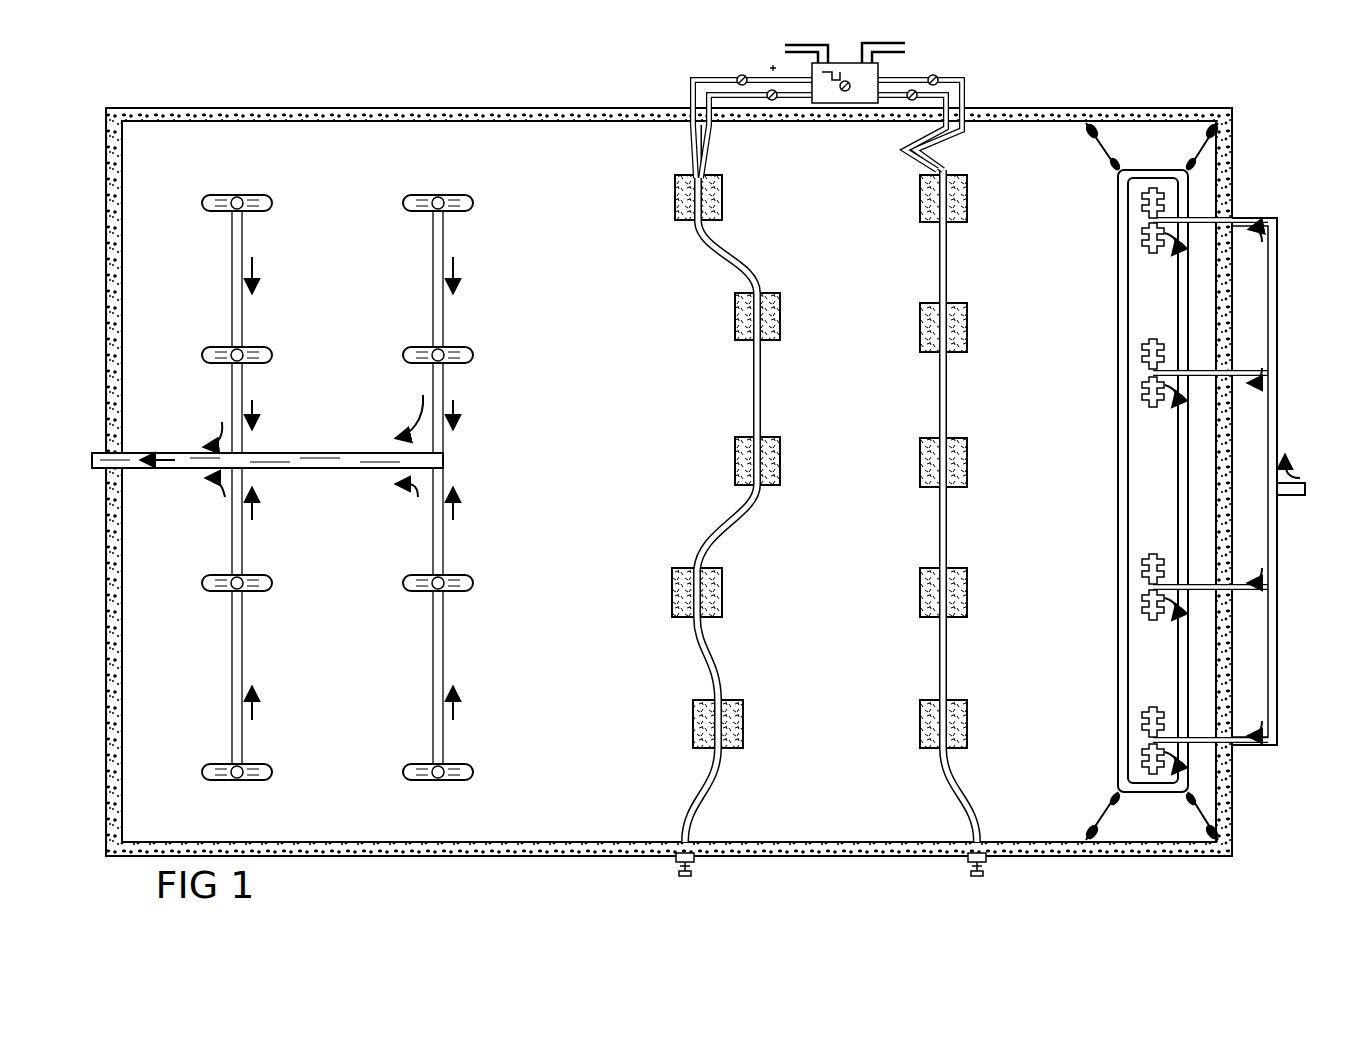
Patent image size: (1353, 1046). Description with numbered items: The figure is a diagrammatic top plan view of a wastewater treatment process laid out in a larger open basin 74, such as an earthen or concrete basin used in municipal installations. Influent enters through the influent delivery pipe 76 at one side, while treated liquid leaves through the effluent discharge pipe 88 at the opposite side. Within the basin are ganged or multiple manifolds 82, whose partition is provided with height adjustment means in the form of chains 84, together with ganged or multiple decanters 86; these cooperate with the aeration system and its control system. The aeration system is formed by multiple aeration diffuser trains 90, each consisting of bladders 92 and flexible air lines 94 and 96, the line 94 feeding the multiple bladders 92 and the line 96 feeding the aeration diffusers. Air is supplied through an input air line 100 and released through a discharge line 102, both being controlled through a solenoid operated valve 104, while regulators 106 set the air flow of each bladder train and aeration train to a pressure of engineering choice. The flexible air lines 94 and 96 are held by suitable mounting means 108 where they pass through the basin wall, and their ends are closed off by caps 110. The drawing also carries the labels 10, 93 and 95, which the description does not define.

The sectional view direction 10 is at (105, 288).
The open basin 74 is at (669, 482).
The influent delivery pipe 76 is at (1313, 487).
The ganged or multiple manifolds 82 is at (1152, 255).
The chains 84 is at (1183, 155).
The ganged or multiple decanters 86 is at (282, 487).
The effluent discharge pipe 88 is at (196, 462).
The aeration diffuser trains 90 is at (912, 258).
The bladders 92 is at (967, 352).
The outlet flow 93 is at (1285, 519).
The flexible air line 94 is at (691, 124).
The heat exchanger housing 95 is at (1118, 465).
The flexible air line 96 is at (712, 138).
The input air line 100 is at (772, 48).
The discharge line 102 is at (908, 46).
The solenoid operated valve 104 is at (877, 78).
The regulators 106 is at (960, 84).
The mounting means 108 is at (965, 110).
The caps 110 is at (676, 874).